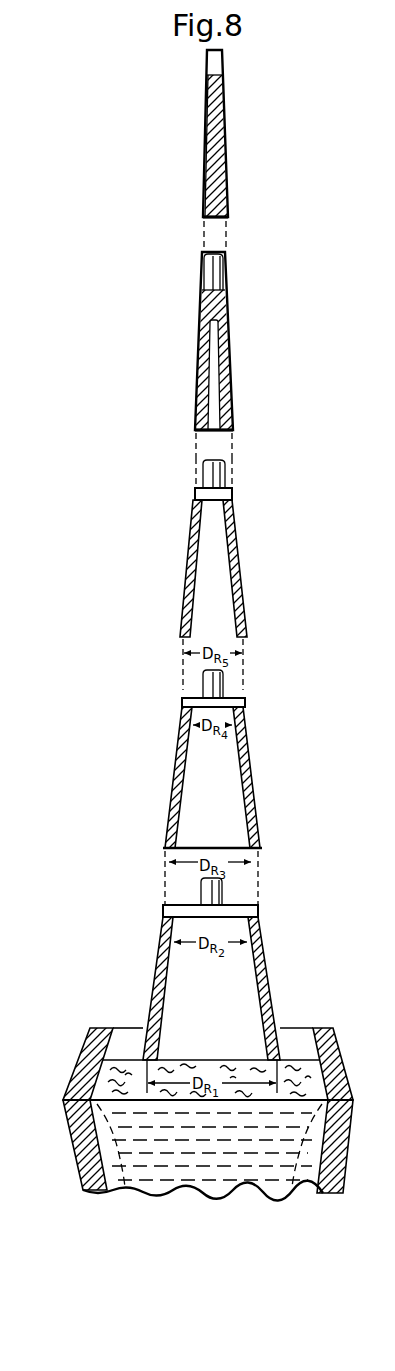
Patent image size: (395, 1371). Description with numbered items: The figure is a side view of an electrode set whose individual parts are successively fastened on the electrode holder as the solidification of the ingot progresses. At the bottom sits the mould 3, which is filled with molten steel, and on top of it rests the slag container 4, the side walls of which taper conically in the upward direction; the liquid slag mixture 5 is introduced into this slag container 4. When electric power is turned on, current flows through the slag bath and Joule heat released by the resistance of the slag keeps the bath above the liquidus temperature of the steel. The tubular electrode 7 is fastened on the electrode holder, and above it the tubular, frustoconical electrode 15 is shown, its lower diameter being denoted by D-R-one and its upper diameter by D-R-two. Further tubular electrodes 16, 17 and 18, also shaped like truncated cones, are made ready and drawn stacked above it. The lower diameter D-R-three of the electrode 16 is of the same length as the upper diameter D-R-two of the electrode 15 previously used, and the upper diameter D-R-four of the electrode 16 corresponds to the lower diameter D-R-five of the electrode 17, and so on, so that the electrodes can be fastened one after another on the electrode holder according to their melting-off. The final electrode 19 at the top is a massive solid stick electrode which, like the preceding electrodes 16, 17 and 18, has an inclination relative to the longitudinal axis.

The mould 3 is at (82, 1156).
The slag container 4 is at (95, 1047).
The liquid slag mixture 5 is at (108, 1084).
The tubular electrode 7 is at (243, 912).
The tubular frustoconical electrode 15 is at (269, 972).
The tubular electrode 16 is at (245, 776).
The tubular electrode 17 is at (233, 561).
The tubular electrode 18 is at (227, 382).
The solid stick electrode 19 is at (218, 156).